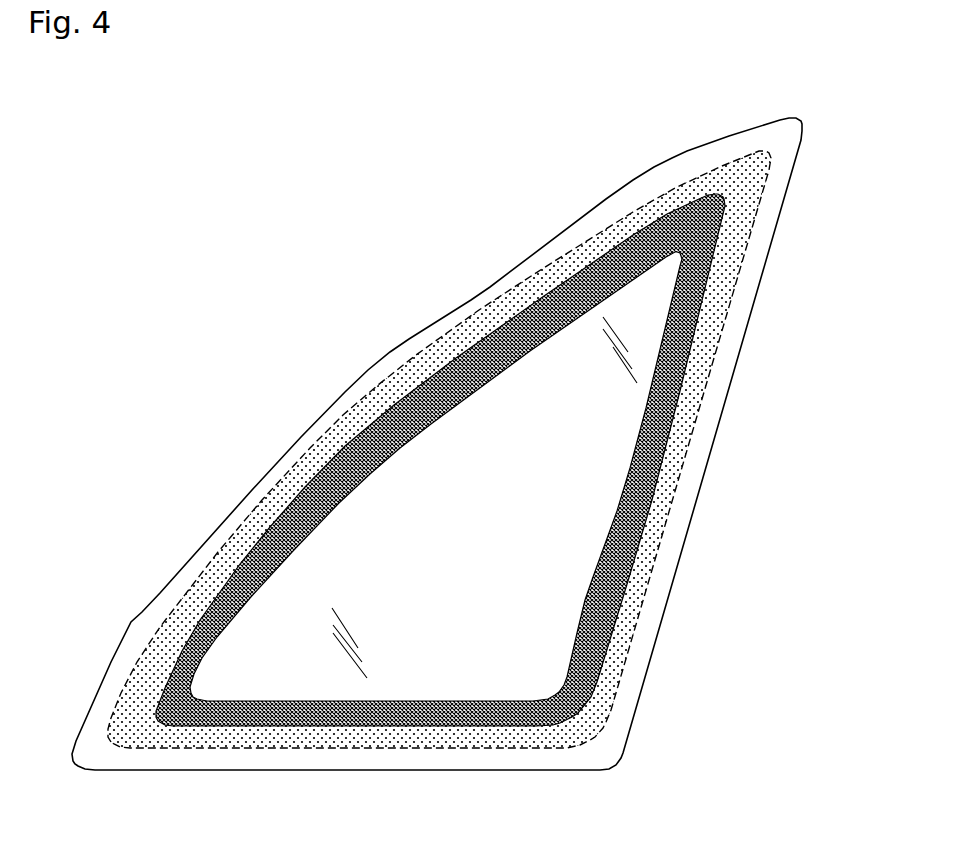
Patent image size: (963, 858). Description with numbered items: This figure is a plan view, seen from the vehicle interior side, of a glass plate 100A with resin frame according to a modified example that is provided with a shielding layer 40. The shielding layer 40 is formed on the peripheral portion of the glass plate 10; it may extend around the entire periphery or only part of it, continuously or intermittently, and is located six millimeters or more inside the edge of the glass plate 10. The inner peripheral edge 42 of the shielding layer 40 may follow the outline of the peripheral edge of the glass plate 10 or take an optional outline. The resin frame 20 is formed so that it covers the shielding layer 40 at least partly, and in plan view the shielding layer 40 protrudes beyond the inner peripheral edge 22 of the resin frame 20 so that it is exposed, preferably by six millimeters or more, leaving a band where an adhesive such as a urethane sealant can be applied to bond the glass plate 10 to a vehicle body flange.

The glass plate with resin frame 100A is at (131, 203).
The glass plate 10 is at (472, 673).
The resin frame 20 is at (378, 757).
The inner peripheral edge of the resin frame 22 is at (247, 573).
The shielding layer 40 is at (190, 637).
The inner peripheral edge of the shielding layer 42 is at (303, 538).